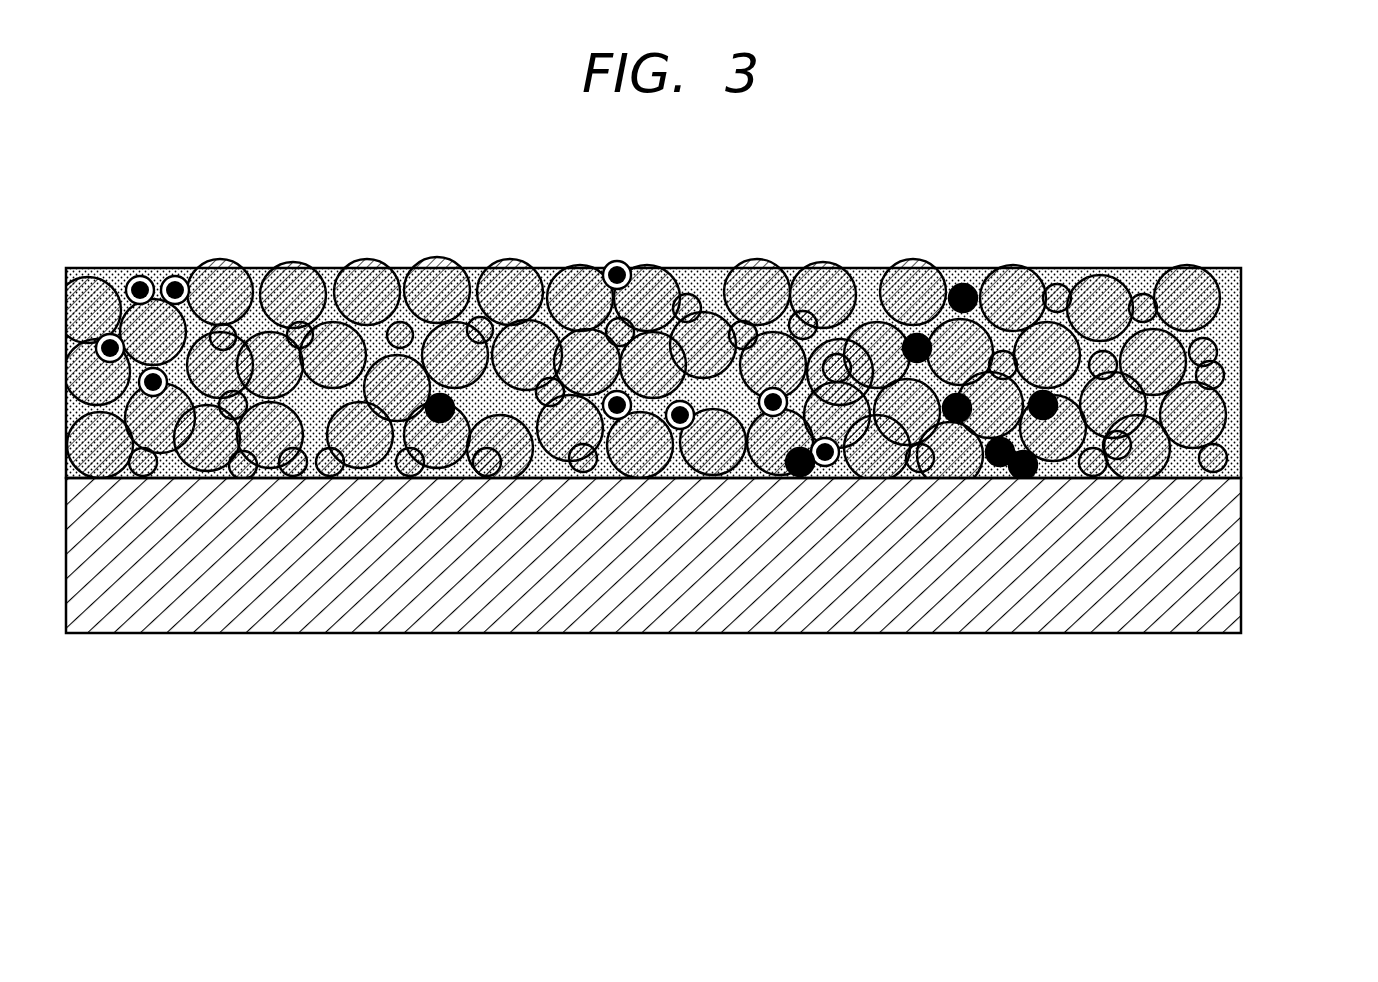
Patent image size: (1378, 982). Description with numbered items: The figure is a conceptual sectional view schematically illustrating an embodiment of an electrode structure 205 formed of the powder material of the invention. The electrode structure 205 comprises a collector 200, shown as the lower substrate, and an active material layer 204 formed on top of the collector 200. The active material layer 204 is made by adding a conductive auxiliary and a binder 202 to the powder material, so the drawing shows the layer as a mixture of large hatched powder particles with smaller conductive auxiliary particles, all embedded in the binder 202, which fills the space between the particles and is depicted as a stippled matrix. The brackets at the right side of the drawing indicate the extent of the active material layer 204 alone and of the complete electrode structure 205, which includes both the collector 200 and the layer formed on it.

The collector 200 is at (545, 620).
The binder 202 is at (695, 283).
The active material layer 204 is at (696, 327).
The electrode structure 205 is at (707, 455).